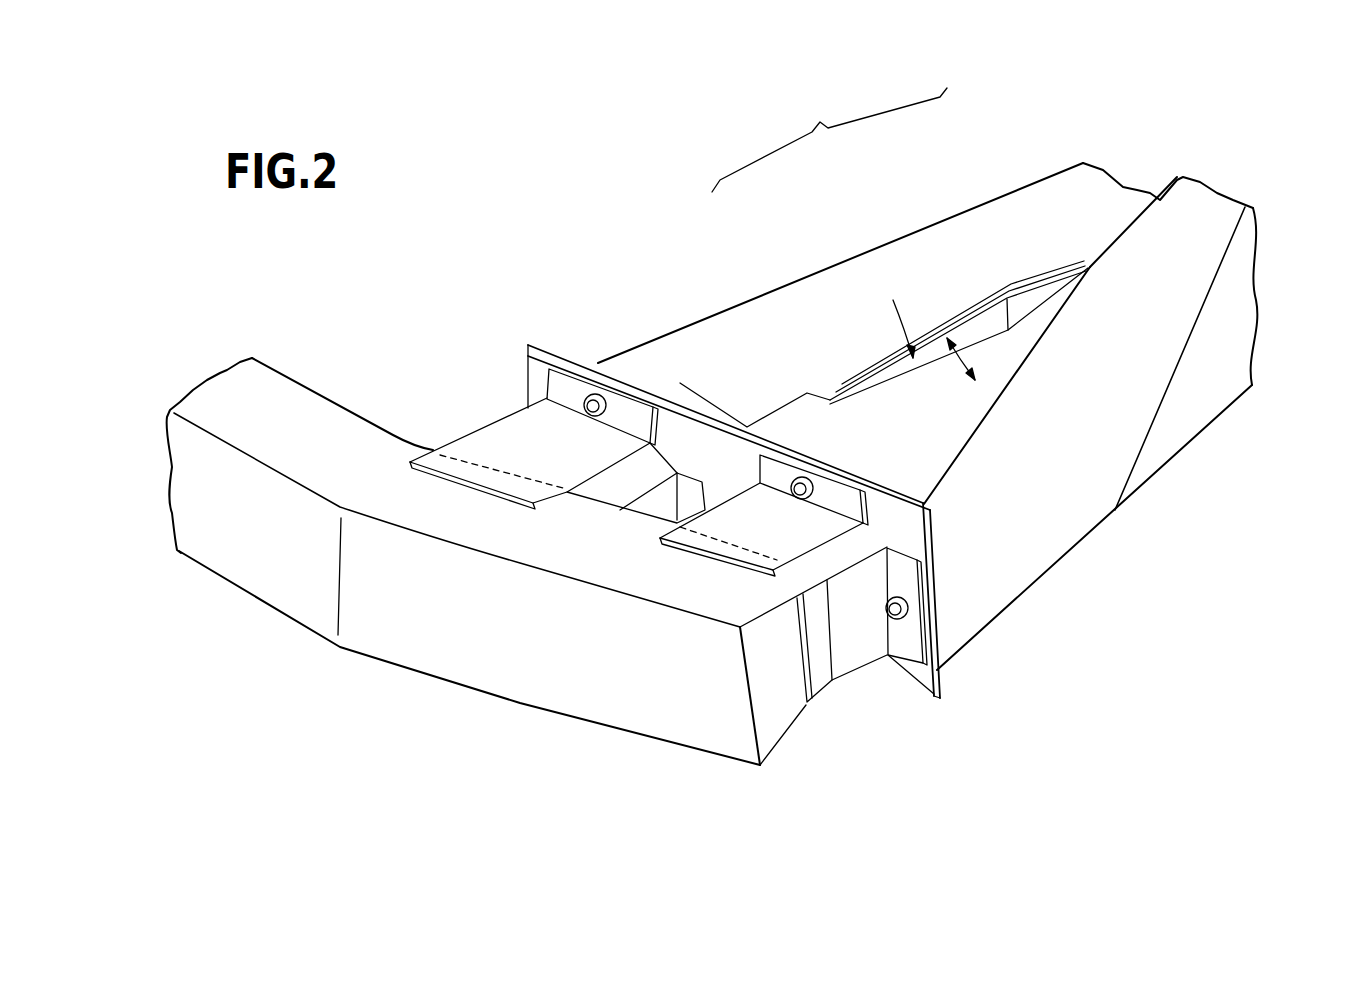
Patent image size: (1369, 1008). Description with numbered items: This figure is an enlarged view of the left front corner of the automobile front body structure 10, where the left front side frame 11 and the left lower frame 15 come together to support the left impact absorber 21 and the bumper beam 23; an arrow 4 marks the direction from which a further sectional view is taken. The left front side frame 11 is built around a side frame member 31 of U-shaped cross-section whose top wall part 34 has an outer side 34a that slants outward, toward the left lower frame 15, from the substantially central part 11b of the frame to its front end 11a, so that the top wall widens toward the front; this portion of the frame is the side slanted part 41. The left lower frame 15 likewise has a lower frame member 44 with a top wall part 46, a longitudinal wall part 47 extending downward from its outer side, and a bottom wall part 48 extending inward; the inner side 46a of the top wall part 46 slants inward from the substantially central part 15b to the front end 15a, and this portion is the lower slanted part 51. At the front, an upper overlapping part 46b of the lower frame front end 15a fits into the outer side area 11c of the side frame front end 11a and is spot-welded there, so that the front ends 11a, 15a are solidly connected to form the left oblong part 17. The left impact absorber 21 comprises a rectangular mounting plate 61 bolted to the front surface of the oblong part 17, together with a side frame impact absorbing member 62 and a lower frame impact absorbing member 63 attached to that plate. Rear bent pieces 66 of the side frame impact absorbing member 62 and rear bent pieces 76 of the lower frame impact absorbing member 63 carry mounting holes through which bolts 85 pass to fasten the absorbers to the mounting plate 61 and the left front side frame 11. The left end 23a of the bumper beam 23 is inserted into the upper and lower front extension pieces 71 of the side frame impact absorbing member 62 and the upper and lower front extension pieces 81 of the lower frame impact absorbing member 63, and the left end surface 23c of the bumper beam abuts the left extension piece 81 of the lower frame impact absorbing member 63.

The automobile front body structure 10 is at (517, 142).
The section line indicator for FIG. 4 is at (740, 124).
The left front side frame 11 is at (1043, 180).
The front end of the left front side frame 11a is at (688, 328).
The substantially central part of the left front side frame 11b is at (995, 265).
The outer side area of the side frame front end 11c is at (747, 420).
The left lower frame 15 is at (1220, 305).
The front end of the left lower frame 15a is at (985, 553).
The substantially central part of the left lower frame 15b is at (1100, 200).
The left oblong part 17 is at (985, 612).
The left impact absorber 21 is at (443, 393).
The bumper beam 23 is at (223, 563).
The left end of the bumper beam 23a is at (500, 687).
The left end surface of the bumper beam 23c is at (783, 723).
The side frame member 31 is at (855, 272).
The top wall part of the side frame member 34 is at (905, 272).
The outer side of the top wall part 34a is at (940, 330).
The side slanted part 41 is at (817, 122).
The lower frame member 44 is at (1091, 345).
The top wall part of the lower frame member 46 is at (1050, 400).
The inner side of the top wall part 46a is at (910, 377).
The upper overlapping part 46b is at (787, 427).
The longitudinal wall part of the lower frame member 47 is at (1197, 363).
The bottom wall part of the lower frame member 48 is at (1043, 540).
The lower slanted part 51 is at (1296, 425).
The mounting plate 61 is at (557, 393).
The side frame impact absorbing member 62 is at (487, 417).
The lower frame impact absorbing member 63 is at (851, 607).
The rear bent pieces 66 is at (565, 385).
The front extension pieces 71 is at (455, 470).
The rear bent pieces 76 is at (833, 497).
The front extension pieces 81 is at (693, 540).
The bolts 85 is at (590, 412).